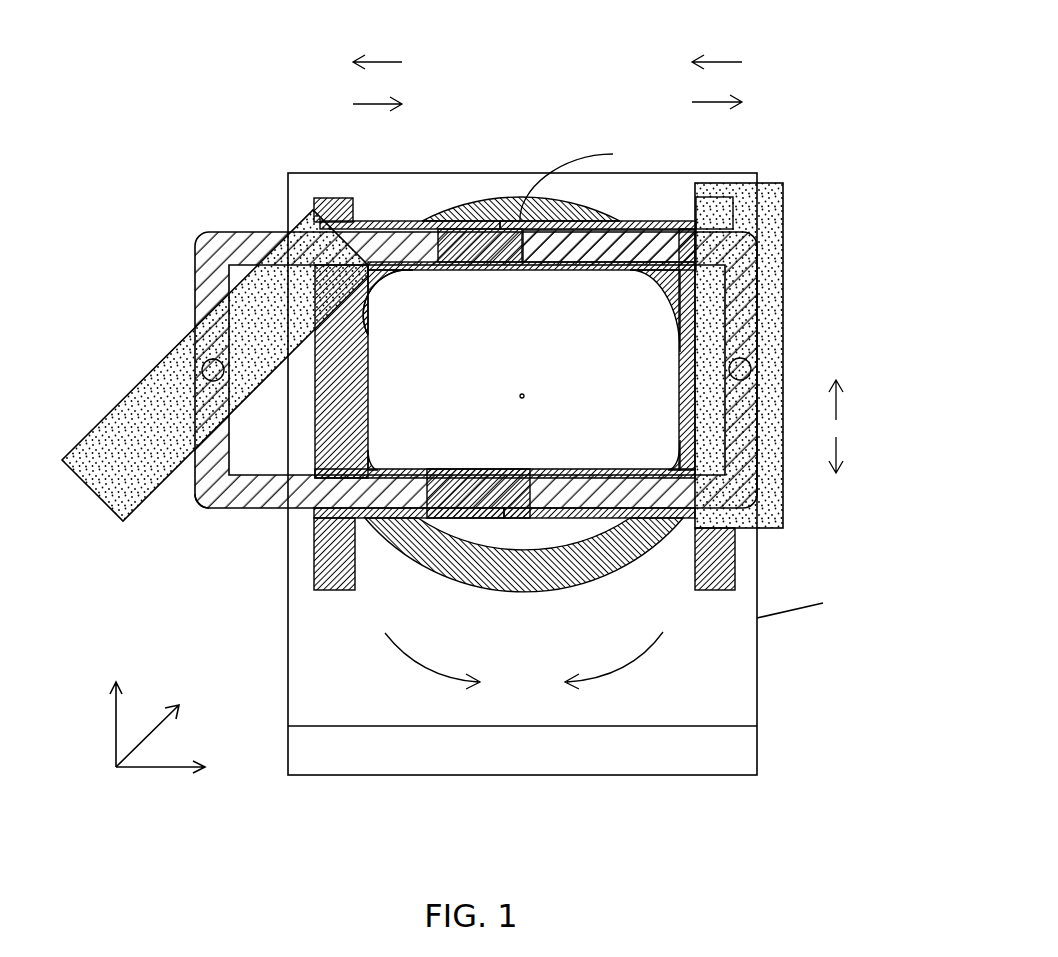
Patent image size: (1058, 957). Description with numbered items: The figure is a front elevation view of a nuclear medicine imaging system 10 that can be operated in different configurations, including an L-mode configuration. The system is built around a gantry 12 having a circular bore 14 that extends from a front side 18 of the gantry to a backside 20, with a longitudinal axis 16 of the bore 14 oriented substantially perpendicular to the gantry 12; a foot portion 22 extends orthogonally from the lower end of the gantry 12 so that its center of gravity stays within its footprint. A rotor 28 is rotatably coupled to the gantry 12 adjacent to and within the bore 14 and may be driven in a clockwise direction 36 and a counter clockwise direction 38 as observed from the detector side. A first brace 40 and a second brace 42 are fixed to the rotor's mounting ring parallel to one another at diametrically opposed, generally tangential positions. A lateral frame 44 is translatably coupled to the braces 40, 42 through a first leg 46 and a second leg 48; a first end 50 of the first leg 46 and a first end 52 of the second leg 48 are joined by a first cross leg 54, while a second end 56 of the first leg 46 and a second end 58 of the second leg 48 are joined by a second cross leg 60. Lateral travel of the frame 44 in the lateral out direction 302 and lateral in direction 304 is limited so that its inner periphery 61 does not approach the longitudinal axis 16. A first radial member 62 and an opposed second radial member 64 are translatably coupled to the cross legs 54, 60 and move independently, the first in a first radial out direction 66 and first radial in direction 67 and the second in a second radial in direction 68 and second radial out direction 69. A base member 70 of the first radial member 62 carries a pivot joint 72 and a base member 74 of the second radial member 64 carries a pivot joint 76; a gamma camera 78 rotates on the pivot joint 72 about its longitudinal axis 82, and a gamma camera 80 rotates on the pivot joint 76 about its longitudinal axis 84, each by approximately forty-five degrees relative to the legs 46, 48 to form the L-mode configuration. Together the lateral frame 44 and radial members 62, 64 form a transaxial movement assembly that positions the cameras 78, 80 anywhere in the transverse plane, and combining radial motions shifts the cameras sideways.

The nuclear medicine imaging system 10 is at (262, 30).
The gantry 12 is at (522, 662).
The bore 14 is at (540, 370).
The longitudinal axis 16 is at (518, 397).
The front side 18 is at (735, 655).
The backside 20 is at (808, 604).
The foot portion 22 is at (522, 742).
The rotor 28 is at (473, 578).
The clockwise direction 36 is at (633, 655).
The counter clockwise direction 38 is at (413, 653).
The first brace 40 is at (340, 197).
The second brace 42 is at (735, 567).
The lateral frame 44 is at (503, 272).
The first leg 46 is at (372, 374).
The second leg 48 is at (680, 392).
The first end of the first leg 50 is at (362, 220).
The first end of the second leg 52 is at (678, 220).
The first cross leg 54 is at (550, 272).
The second end of the first leg 56 is at (313, 517).
The second end of the second leg 58 is at (687, 520).
The second cross leg 60 is at (555, 519).
The inner periphery 61 is at (372, 413).
The first radial member 62 is at (197, 500).
The second radial member 64 is at (603, 268).
The Radial-1 out direction 66 is at (390, 62).
The Radial-1 in direction 67 is at (365, 106).
The Radial-2 in direction 68 is at (730, 62).
The Radial-2 out direction 69 is at (705, 104).
The base member 70 is at (225, 447).
The pivot joint 72 is at (213, 359).
The base member 74 is at (773, 512).
The pivot joint 76 is at (751, 363).
The gamma camera 78 is at (113, 507).
The gamma camera 80 is at (770, 187).
The longitudinal axis of the pivot joint 82 is at (204, 368).
The longitudinal axis of the pivot joint 84 is at (752, 374).
The lateral out direction 302 is at (836, 405).
The lateral in direction 304 is at (836, 445).